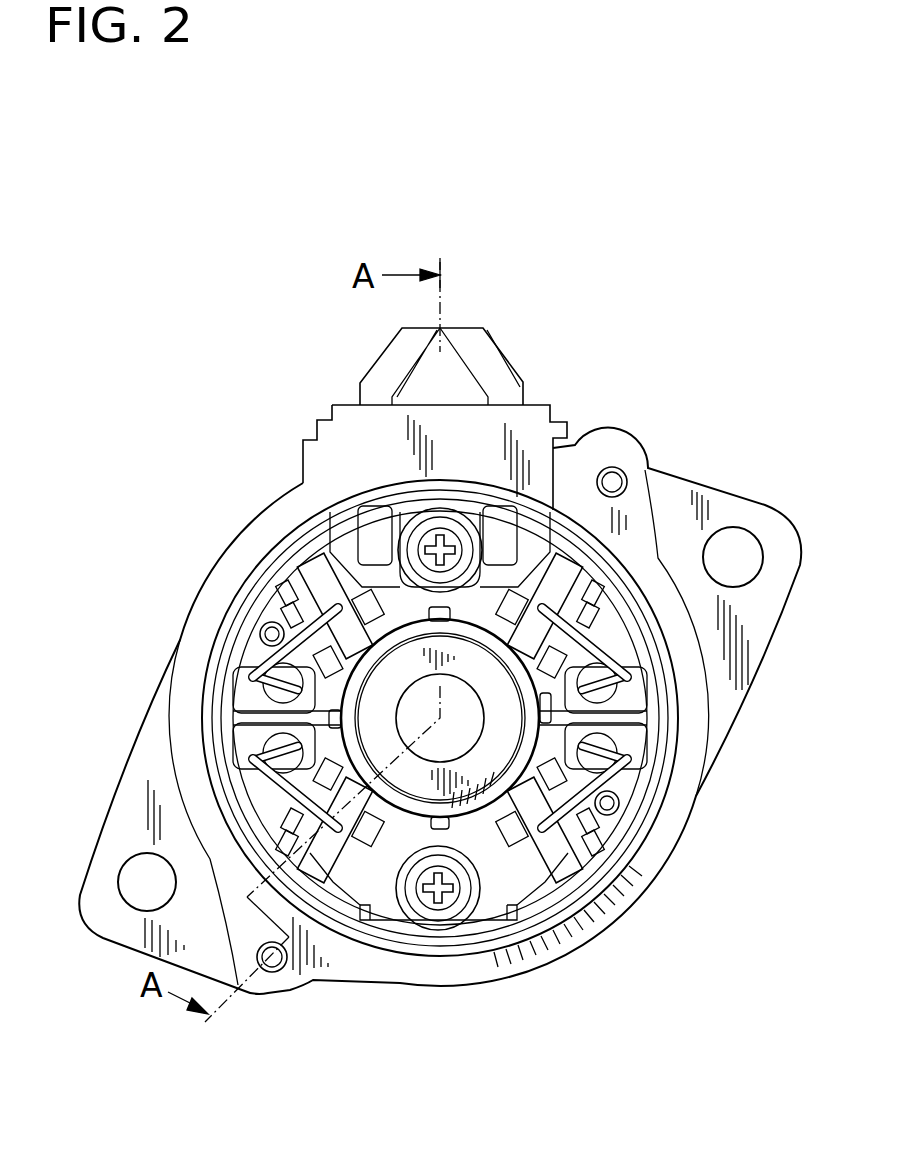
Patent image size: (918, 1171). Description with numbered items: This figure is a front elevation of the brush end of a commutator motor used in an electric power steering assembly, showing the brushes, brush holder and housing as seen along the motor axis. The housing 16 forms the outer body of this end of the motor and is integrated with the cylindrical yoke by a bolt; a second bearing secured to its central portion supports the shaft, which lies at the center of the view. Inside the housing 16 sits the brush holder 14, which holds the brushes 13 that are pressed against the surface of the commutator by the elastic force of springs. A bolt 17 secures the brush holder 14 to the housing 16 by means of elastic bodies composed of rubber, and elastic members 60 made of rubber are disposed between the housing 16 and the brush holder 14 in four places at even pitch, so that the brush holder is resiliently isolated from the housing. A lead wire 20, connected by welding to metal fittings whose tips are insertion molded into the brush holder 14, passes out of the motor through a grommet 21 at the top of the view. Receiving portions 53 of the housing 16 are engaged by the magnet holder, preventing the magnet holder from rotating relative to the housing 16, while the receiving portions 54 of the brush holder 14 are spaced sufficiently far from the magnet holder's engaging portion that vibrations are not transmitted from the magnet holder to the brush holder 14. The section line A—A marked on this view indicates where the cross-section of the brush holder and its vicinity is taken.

The brushes 13 is at (277, 563).
The brush holder 14 is at (357, 912).
The housing 16 is at (660, 852).
The bolt 17 is at (455, 540).
The lead wire 20 is at (490, 360).
The grommet 21 is at (360, 440).
The receiving portions 53 is at (203, 698).
The receiving portions 54 is at (243, 803).
The elastic members 60 is at (285, 557).